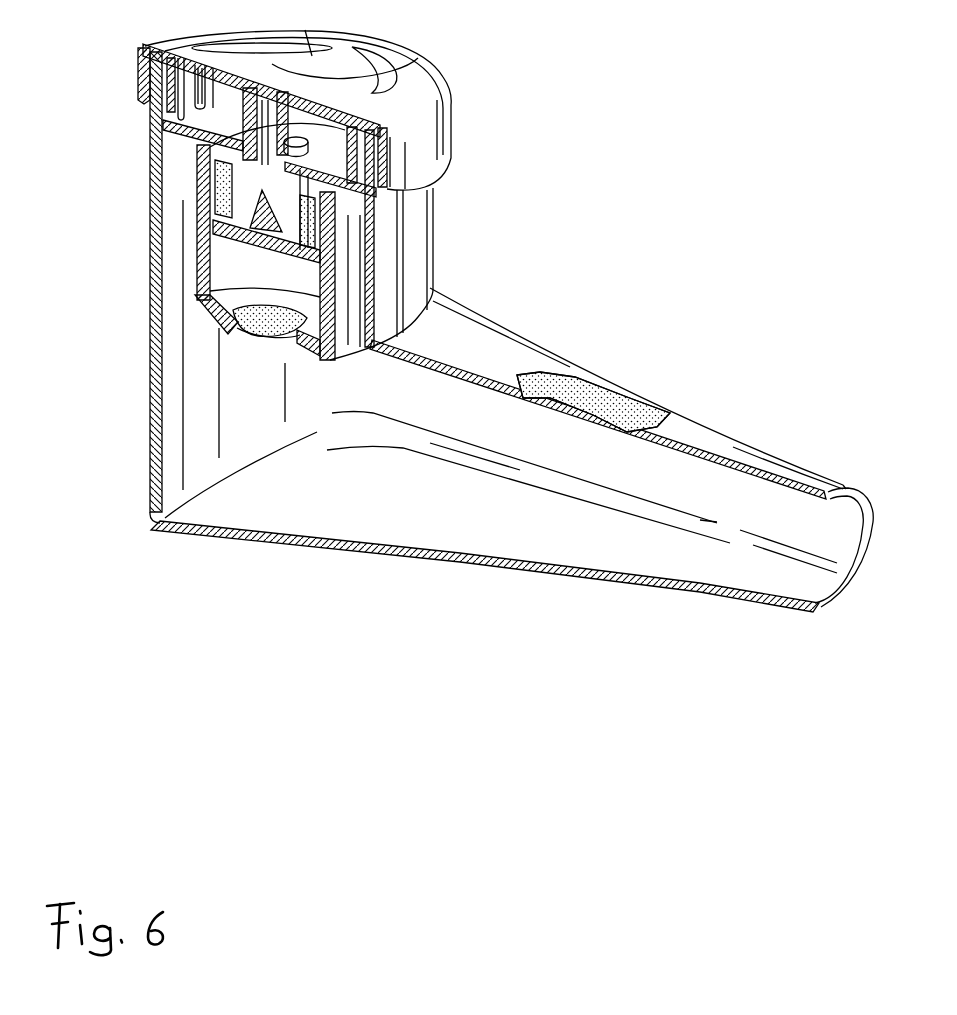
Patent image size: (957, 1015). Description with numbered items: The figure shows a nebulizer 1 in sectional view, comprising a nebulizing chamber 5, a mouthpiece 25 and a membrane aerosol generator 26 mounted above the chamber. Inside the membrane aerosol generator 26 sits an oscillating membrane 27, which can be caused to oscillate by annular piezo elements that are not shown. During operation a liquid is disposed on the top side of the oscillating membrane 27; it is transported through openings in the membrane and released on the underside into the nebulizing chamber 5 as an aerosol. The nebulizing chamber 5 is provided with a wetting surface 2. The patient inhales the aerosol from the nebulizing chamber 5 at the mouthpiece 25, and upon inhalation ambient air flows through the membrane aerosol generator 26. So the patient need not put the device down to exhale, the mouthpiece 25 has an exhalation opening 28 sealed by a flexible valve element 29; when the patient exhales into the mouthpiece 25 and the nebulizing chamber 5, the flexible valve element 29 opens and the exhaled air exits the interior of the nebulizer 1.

The nebulizer 1 is at (557, 146).
The wetting surface 2 is at (377, 516).
The nebulizing chamber 5 is at (437, 412).
The mouthpiece 25 is at (788, 460).
The membrane aerosol generator 26 is at (351, 281).
The oscillating membrane 27 is at (263, 330).
The exhalation opening 28 is at (577, 413).
The flexible valve element 29 is at (612, 385).